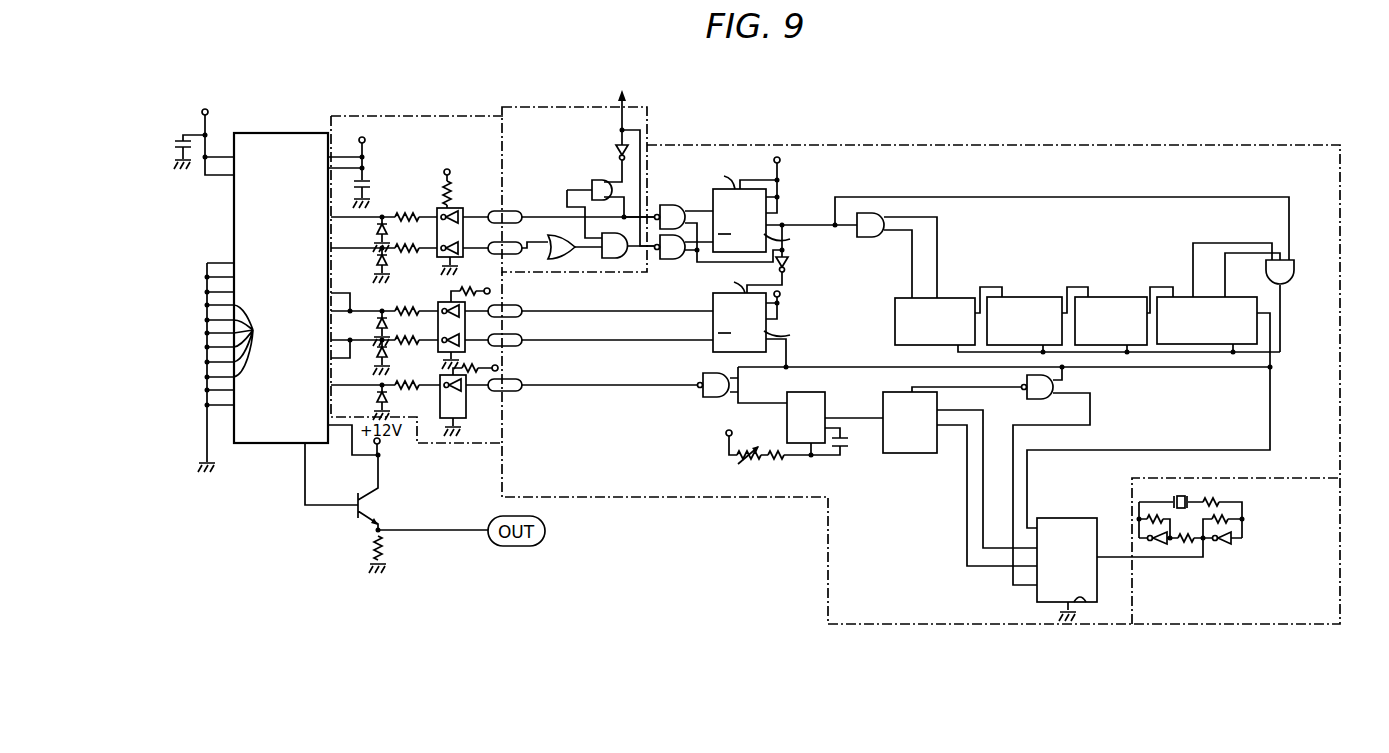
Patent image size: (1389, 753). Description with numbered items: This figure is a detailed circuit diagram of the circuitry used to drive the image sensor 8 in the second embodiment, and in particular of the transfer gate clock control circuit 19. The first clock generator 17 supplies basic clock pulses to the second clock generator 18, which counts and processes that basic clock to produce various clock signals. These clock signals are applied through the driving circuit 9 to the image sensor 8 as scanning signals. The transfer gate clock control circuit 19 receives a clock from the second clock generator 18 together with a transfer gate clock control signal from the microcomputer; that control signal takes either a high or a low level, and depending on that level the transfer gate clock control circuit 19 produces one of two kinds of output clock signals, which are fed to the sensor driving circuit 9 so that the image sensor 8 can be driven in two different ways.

The image sensor 8 is at (281, 133).
The driving circuit 9 is at (440, 116).
The first clock generator 17 is at (1343, 505).
The second clock generator 18 is at (1190, 145).
The transfer gate clock control circuit 19 is at (535, 107).